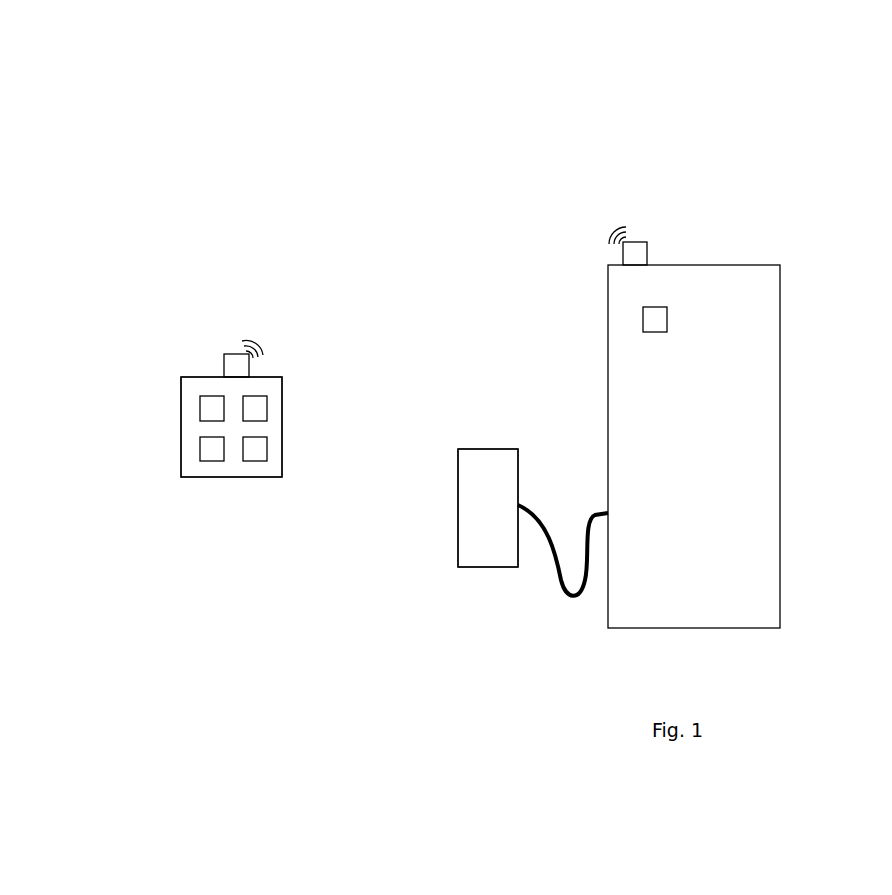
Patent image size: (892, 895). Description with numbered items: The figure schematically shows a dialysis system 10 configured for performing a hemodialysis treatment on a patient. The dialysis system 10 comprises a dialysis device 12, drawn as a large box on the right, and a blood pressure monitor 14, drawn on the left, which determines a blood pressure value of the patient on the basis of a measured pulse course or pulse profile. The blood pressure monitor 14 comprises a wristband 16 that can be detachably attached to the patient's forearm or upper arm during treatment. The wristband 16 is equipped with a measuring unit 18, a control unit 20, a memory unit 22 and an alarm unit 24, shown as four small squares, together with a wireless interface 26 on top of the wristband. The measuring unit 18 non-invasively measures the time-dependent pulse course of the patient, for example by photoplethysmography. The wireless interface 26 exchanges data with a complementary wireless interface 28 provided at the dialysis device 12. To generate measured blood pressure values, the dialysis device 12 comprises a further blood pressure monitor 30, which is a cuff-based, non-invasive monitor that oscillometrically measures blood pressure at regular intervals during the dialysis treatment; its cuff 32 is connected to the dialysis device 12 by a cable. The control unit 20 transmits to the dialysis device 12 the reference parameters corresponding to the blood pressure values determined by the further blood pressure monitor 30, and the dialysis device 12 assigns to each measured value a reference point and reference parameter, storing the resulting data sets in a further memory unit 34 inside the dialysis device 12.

The dialysis system 10 is at (316, 93).
The dialysis device 12 is at (741, 255).
The blood pressure monitor 14 is at (196, 328).
The wristband 16 is at (192, 385).
The measuring unit 18 is at (213, 410).
The control unit 20 is at (213, 447).
The memory unit 22 is at (255, 408).
The alarm unit 24 is at (255, 451).
The wireless interface 26 is at (233, 367).
The wireless interface 28 is at (627, 253).
The further blood pressure monitor 30 is at (486, 432).
The cuff 32 is at (472, 532).
The further memory unit 34 is at (647, 315).